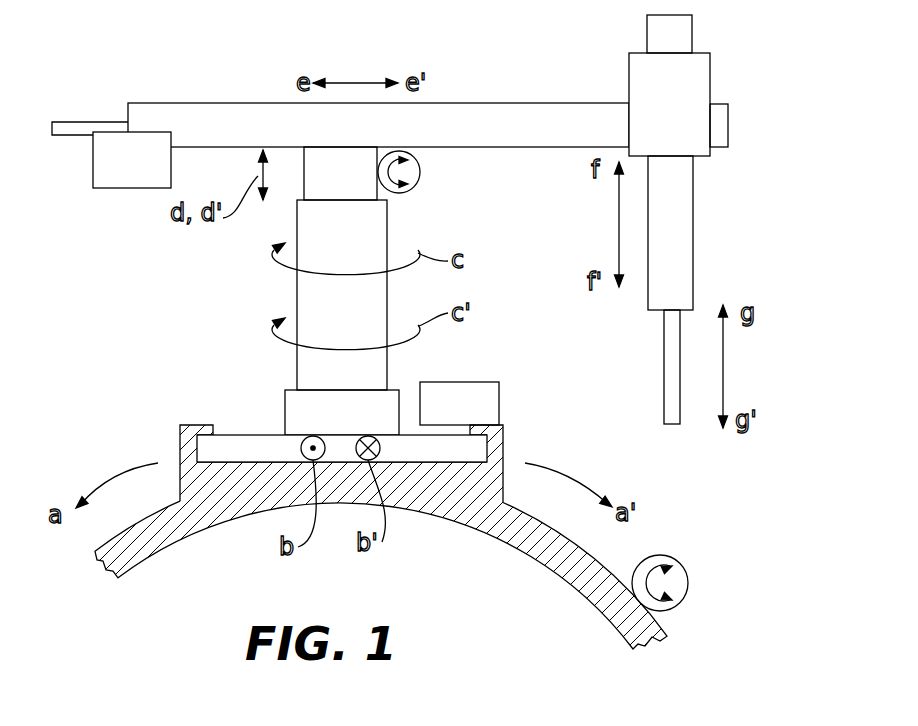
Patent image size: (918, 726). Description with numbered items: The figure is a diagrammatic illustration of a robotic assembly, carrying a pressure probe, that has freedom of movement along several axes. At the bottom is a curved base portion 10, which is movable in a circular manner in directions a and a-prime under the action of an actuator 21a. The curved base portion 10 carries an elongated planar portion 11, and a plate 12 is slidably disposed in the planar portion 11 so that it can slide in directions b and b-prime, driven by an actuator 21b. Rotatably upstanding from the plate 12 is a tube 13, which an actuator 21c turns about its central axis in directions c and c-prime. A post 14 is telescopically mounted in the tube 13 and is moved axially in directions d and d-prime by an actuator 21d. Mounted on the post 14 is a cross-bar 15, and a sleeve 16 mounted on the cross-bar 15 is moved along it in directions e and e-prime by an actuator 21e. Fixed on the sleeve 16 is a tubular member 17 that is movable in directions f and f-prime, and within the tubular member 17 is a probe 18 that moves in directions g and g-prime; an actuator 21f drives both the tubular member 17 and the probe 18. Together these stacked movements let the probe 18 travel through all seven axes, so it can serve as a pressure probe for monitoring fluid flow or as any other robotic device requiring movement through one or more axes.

The curved base portion 10 is at (592, 605).
The elongated planar portion 11 is at (503, 445).
The plate 12 is at (247, 435).
The tube 13 is at (387, 213).
The post 14 is at (326, 191).
The cross-bar 15 is at (64, 122).
The sleeve 16 is at (480, 103).
The tubular member 17 is at (682, 197).
The probe 18 is at (664, 356).
The actuator 21a is at (688, 576).
The actuator 21b is at (453, 382).
The actuator 21c is at (318, 425).
The actuator 21d is at (420, 172).
The actuator 21e is at (110, 173).
The actuator 21f is at (650, 108).